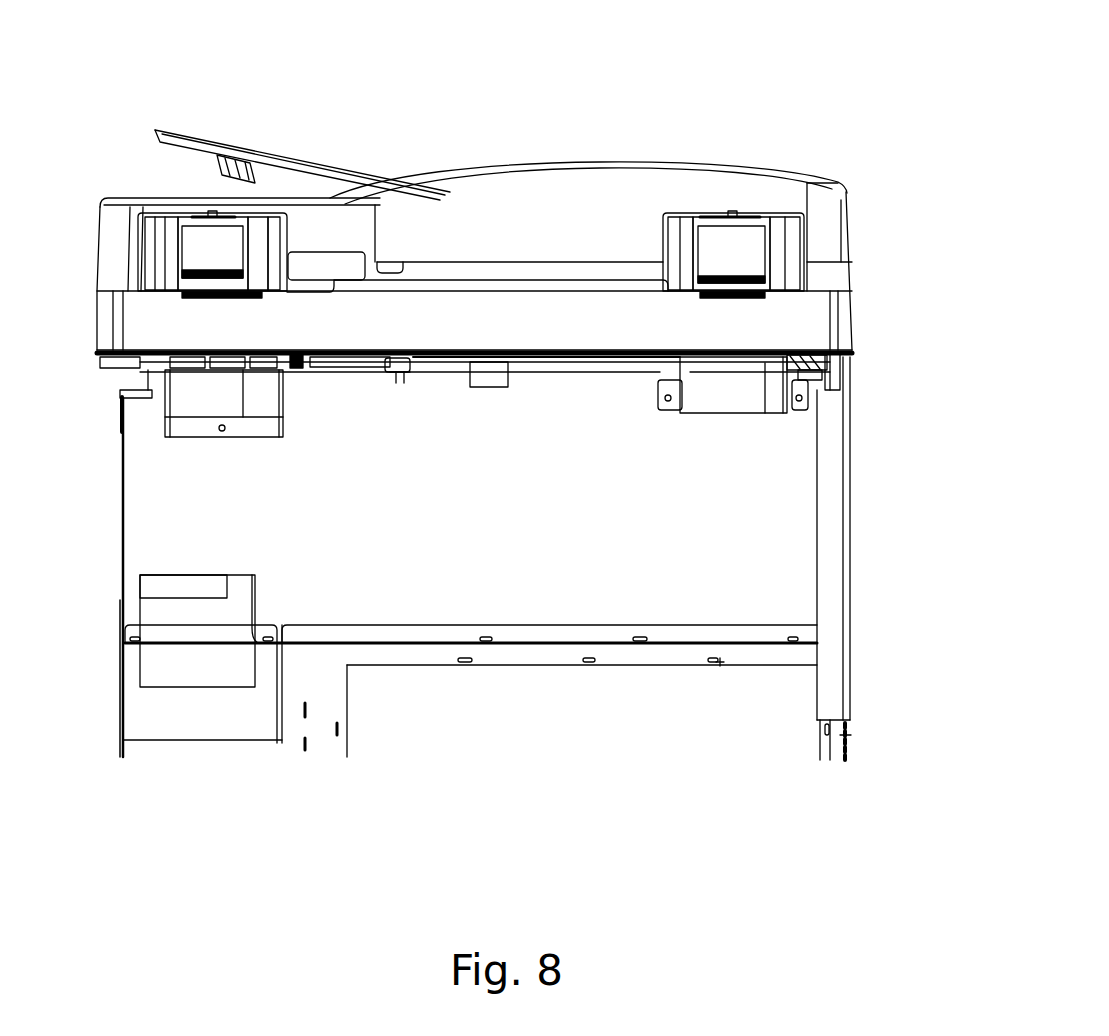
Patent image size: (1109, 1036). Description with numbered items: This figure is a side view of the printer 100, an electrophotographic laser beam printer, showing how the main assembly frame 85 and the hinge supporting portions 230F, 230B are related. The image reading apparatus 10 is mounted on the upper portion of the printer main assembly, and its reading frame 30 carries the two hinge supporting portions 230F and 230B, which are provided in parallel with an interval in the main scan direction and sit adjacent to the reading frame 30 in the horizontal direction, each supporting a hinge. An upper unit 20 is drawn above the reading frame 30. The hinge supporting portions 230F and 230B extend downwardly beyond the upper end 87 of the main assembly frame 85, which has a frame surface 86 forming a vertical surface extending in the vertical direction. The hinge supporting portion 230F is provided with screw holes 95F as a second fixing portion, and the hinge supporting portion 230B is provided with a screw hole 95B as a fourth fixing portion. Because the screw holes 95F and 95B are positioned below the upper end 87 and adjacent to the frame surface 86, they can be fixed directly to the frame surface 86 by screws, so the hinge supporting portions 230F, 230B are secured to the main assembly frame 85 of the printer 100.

The printer 100 is at (546, 33).
The image reading apparatus 10 is at (933, 196).
The upper unit (document conveying unit) 20 is at (854, 229).
The reading frame 30 is at (858, 323).
The hinge supporting portion 230B is at (188, 387).
The hinge supporting portion 230F is at (762, 368).
The screw holes 95F is at (683, 398).
The screw hole 95B is at (220, 428).
The frame surface 86 is at (767, 546).
The main assembly frame 85 is at (858, 690).
The upper end 87 is at (618, 353).